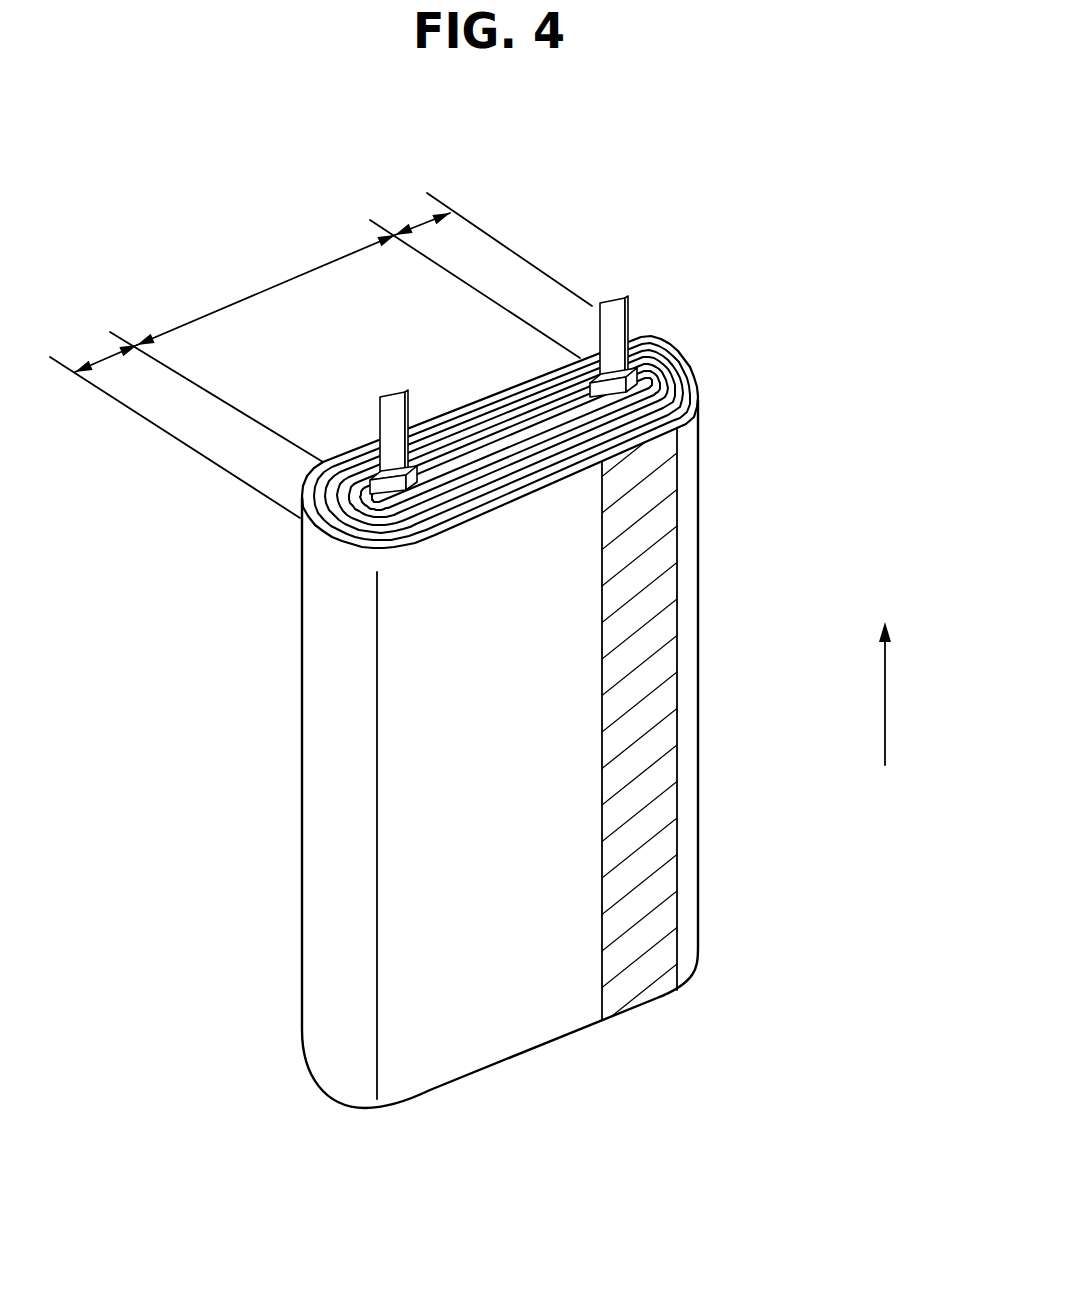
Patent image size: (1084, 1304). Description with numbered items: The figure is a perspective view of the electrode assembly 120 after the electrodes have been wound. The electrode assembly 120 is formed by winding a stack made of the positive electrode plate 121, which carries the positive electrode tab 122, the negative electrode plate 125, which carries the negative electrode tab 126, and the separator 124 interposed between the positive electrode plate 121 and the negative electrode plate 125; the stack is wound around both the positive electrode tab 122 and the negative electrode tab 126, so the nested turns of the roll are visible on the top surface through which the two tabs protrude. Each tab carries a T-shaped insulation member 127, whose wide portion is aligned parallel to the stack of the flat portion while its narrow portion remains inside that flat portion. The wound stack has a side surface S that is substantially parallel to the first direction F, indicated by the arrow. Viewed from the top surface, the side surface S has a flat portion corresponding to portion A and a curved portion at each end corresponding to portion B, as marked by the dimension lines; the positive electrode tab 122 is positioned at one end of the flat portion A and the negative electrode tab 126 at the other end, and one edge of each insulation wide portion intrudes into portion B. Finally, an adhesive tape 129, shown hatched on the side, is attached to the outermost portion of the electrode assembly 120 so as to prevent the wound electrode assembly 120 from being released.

The electrode assembly 120 is at (812, 290).
The positive electrode plate 121 is at (684, 367).
The positive electrode tab 122 is at (620, 293).
The separator 124 is at (698, 385).
The negative electrode plate 125 is at (671, 408).
The negative electrode tab 126 is at (398, 403).
The insulation member 127 is at (363, 493).
The adhesive tape 129 is at (660, 613).
The flat portion A is at (266, 290).
The curved portion B is at (321, 344).
The first direction F is at (907, 693).
The side surface S is at (540, 825).